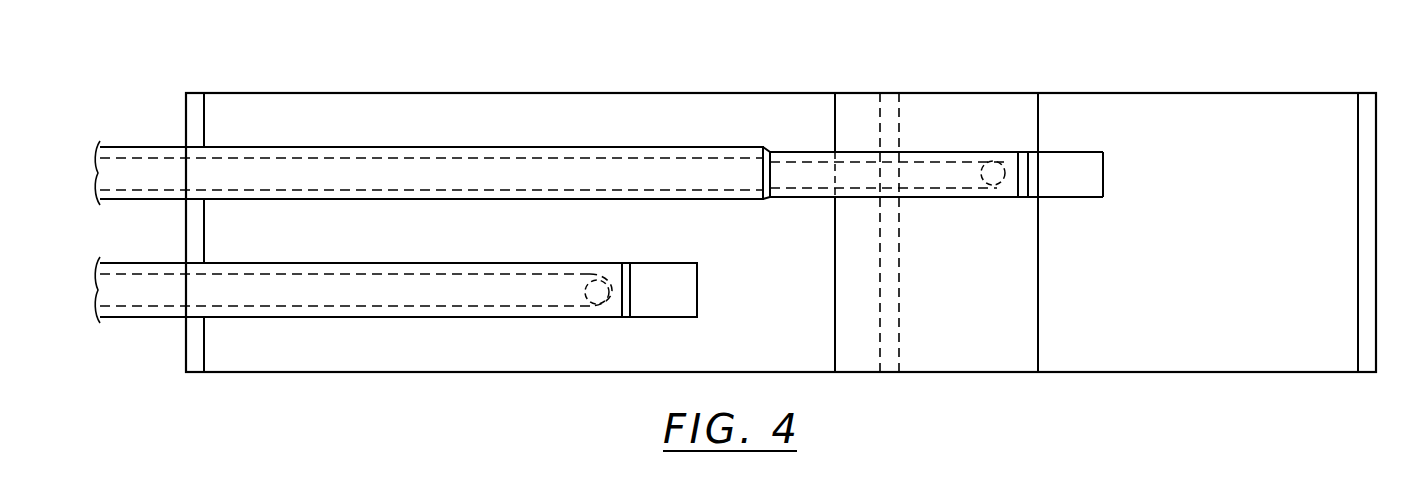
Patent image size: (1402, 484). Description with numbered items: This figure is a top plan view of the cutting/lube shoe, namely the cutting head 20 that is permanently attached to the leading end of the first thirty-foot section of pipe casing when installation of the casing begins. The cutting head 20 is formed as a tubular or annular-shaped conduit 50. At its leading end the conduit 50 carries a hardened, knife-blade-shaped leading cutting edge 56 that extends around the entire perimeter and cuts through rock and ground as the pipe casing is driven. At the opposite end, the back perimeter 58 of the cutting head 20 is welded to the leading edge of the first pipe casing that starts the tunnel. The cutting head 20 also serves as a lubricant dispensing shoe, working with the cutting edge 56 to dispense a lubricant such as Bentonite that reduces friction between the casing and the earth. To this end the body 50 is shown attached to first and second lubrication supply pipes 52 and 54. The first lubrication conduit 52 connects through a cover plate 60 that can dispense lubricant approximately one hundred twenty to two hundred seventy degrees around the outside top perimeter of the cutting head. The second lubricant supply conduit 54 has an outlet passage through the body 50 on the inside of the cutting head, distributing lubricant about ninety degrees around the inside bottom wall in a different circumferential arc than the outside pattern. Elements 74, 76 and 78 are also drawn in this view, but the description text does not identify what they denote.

The cutting head 20 is at (940, 62).
The conduit 50 is at (1252, 93).
The first lubrication supply pipe 52 is at (370, 147).
The second lubrication supply pipe 54 is at (375, 318).
The leading cutting edge 56 is at (1380, 112).
The back perimeter 58 is at (186, 110).
The cover plate 60 is at (972, 103).
The piston head 74 is at (1088, 160).
The pin 76 is at (998, 163).
The lower piston head 78 is at (667, 300).